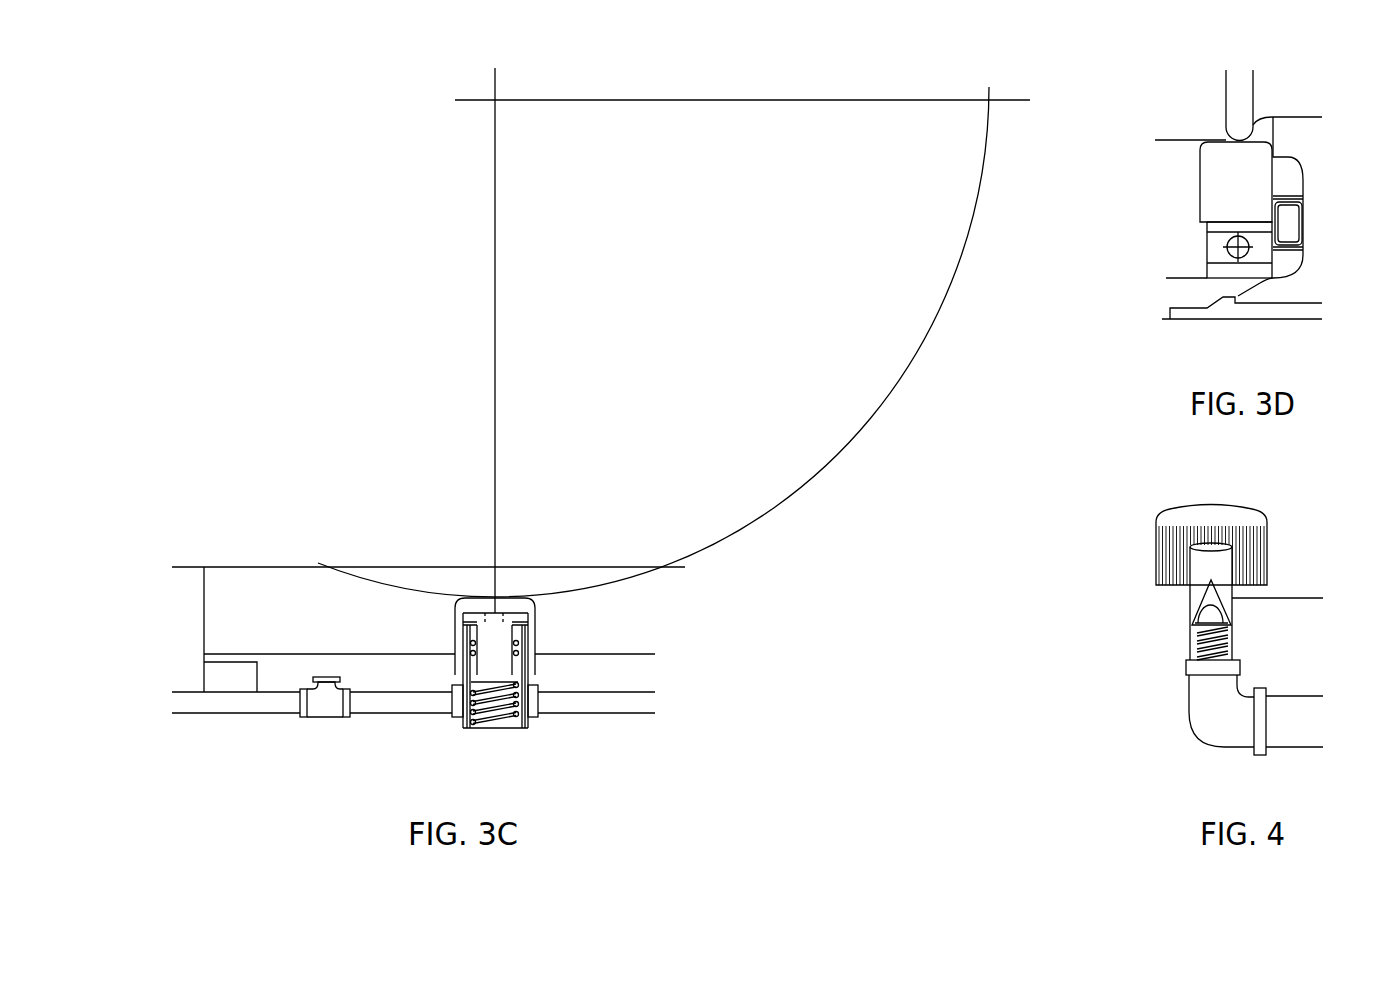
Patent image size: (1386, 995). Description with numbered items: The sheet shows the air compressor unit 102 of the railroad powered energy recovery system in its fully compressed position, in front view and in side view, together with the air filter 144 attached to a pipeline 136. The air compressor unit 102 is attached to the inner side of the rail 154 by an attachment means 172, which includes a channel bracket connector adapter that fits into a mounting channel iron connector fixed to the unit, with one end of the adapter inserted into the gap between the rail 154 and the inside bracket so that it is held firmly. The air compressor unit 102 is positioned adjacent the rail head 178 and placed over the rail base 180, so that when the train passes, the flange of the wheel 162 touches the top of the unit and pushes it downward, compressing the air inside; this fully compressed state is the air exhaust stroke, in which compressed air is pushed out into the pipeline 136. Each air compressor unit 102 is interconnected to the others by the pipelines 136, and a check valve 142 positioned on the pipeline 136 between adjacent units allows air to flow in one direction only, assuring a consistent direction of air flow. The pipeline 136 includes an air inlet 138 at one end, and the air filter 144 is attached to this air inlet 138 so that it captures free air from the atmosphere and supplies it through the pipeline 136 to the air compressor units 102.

In FIG. 3C, the air compressor unit 102 is at (505, 732).
In FIG. 3D, the air compressor unit 102 is at (1200, 195).
In FIG. 3C, the pipeline 136 is at (183, 715).
In FIG. 4, the pipeline 136 is at (1283, 748).
In FIG. 4, the air inlet 138 is at (1272, 702).
In FIG. 3C, the check valve 142 is at (320, 710).
In FIG. 4, the air filter 144 is at (1225, 506).
In FIG. 3C, the rail 154 is at (240, 566).
In FIG. 3D, the rail 154 is at (1300, 133).
In FIG. 3C, the wheel 162 is at (966, 249).
In FIG. 3D, the wheel 162 is at (1224, 97).
In FIG. 3D, the attachment means 172 is at (1290, 218).
In FIG. 3D, the rail head 178 is at (1263, 115).
In FIG. 3D, the rail base 180 is at (1285, 288).